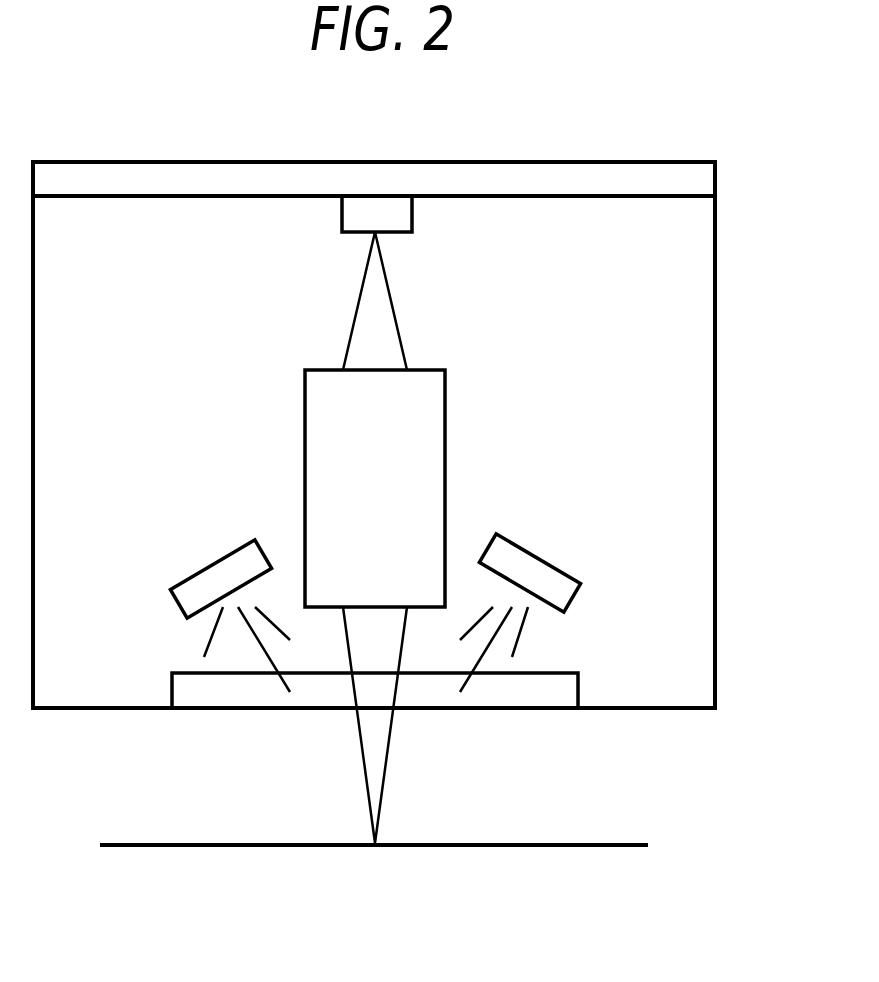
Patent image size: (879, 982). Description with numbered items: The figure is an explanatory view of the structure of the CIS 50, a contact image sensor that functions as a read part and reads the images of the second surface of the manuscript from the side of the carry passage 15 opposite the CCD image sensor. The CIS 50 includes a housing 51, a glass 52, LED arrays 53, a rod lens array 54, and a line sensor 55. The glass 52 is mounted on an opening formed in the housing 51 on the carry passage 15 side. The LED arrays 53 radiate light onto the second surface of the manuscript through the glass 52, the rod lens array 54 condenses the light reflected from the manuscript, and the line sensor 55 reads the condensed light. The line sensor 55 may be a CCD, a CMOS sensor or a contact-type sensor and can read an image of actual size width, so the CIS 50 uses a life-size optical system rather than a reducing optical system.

The carry passage 15 is at (133, 848).
The CIS 50 is at (678, 722).
The housing 51 is at (715, 405).
The glass 52 is at (545, 690).
The LED arrays 53 is at (221, 573).
The rod lens array 54 is at (408, 440).
The line sensor 55 is at (392, 215).